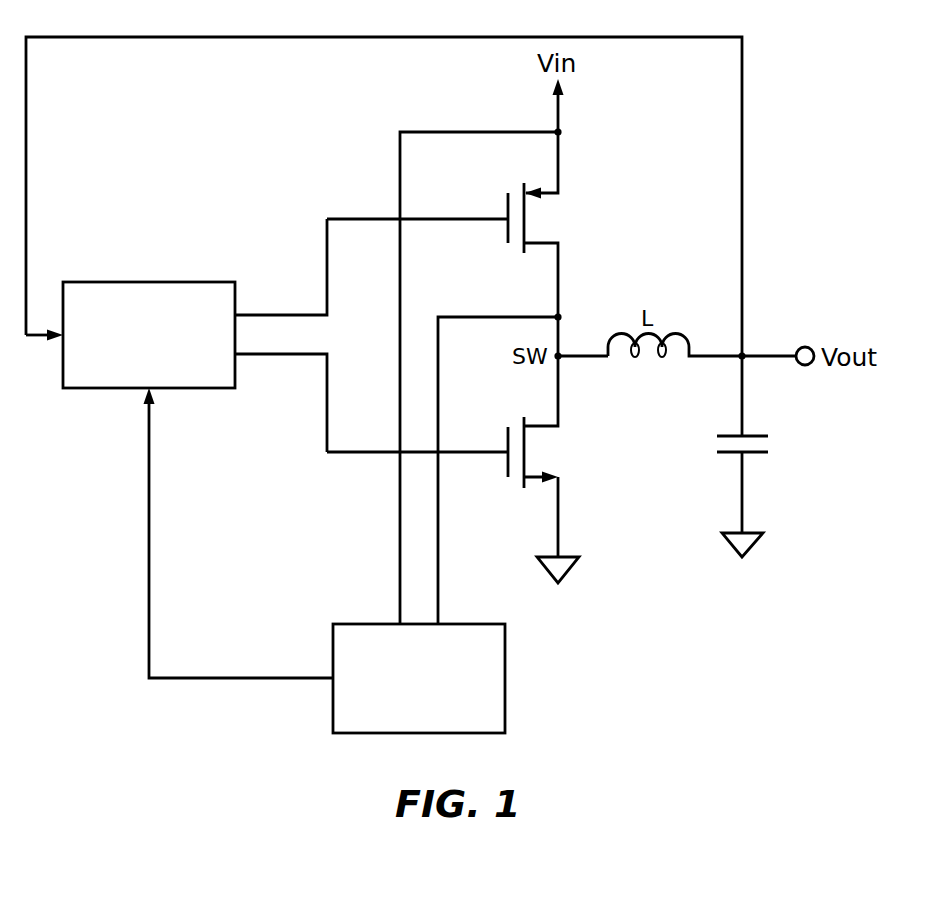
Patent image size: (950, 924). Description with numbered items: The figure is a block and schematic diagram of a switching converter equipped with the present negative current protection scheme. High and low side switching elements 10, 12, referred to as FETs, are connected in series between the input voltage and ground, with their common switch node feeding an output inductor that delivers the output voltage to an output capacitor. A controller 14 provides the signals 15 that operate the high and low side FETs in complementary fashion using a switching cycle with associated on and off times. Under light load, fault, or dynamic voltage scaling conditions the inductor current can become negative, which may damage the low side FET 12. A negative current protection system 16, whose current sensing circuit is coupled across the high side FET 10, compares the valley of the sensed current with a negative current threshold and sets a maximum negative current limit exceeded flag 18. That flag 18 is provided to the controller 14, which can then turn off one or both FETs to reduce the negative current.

The high side switching element 10 is at (537, 180).
The low side switching element 12 is at (537, 415).
The controller 14 is at (148, 281).
The signals 15 is at (300, 313).
The negative current protection system 16 is at (505, 678).
The maximum negative current limit exceeded flag 18 is at (148, 532).